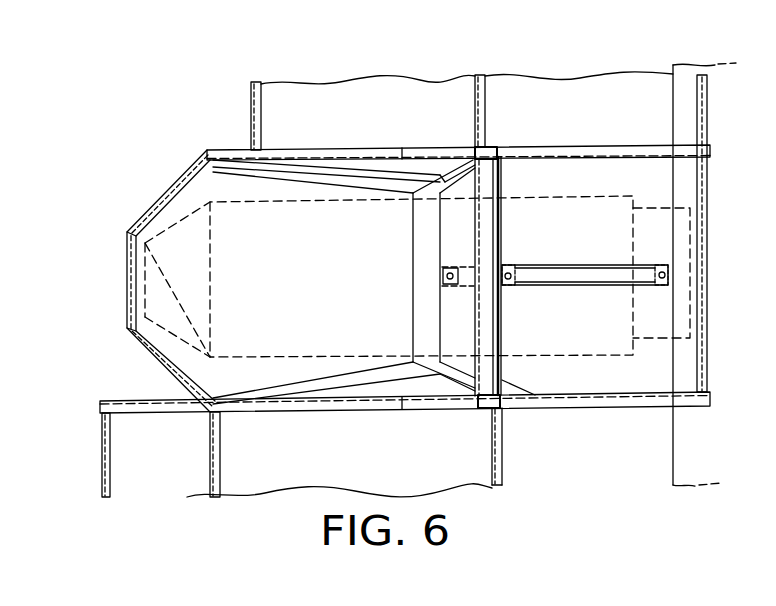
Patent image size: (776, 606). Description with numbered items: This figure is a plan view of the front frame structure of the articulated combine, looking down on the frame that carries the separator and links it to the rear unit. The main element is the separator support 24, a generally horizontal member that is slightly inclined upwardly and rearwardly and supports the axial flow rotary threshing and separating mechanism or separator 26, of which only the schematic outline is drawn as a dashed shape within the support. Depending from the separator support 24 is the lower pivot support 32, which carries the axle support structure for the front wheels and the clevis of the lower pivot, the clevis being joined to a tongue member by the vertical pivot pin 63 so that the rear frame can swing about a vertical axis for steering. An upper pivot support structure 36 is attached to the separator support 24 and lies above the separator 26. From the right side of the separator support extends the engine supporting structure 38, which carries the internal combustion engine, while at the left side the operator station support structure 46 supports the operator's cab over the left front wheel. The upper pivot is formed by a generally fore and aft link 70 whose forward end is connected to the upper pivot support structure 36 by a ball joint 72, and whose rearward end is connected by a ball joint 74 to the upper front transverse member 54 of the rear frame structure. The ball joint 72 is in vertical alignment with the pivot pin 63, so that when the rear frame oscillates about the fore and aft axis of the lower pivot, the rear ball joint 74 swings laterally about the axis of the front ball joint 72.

The separator support 24 is at (184, 183).
The separator 26 is at (555, 360).
The lower pivot support 32 is at (455, 364).
The upper pivot support structure 36 is at (495, 318).
The engine supporting structure 38 is at (251, 108).
The operator station support structure 46 is at (152, 403).
The upper front transverse member 54 is at (680, 369).
The vertical pivot pin 63 is at (450, 274).
The link 70 is at (602, 267).
The ball joint 72 is at (506, 268).
The ball joint 74 is at (667, 265).